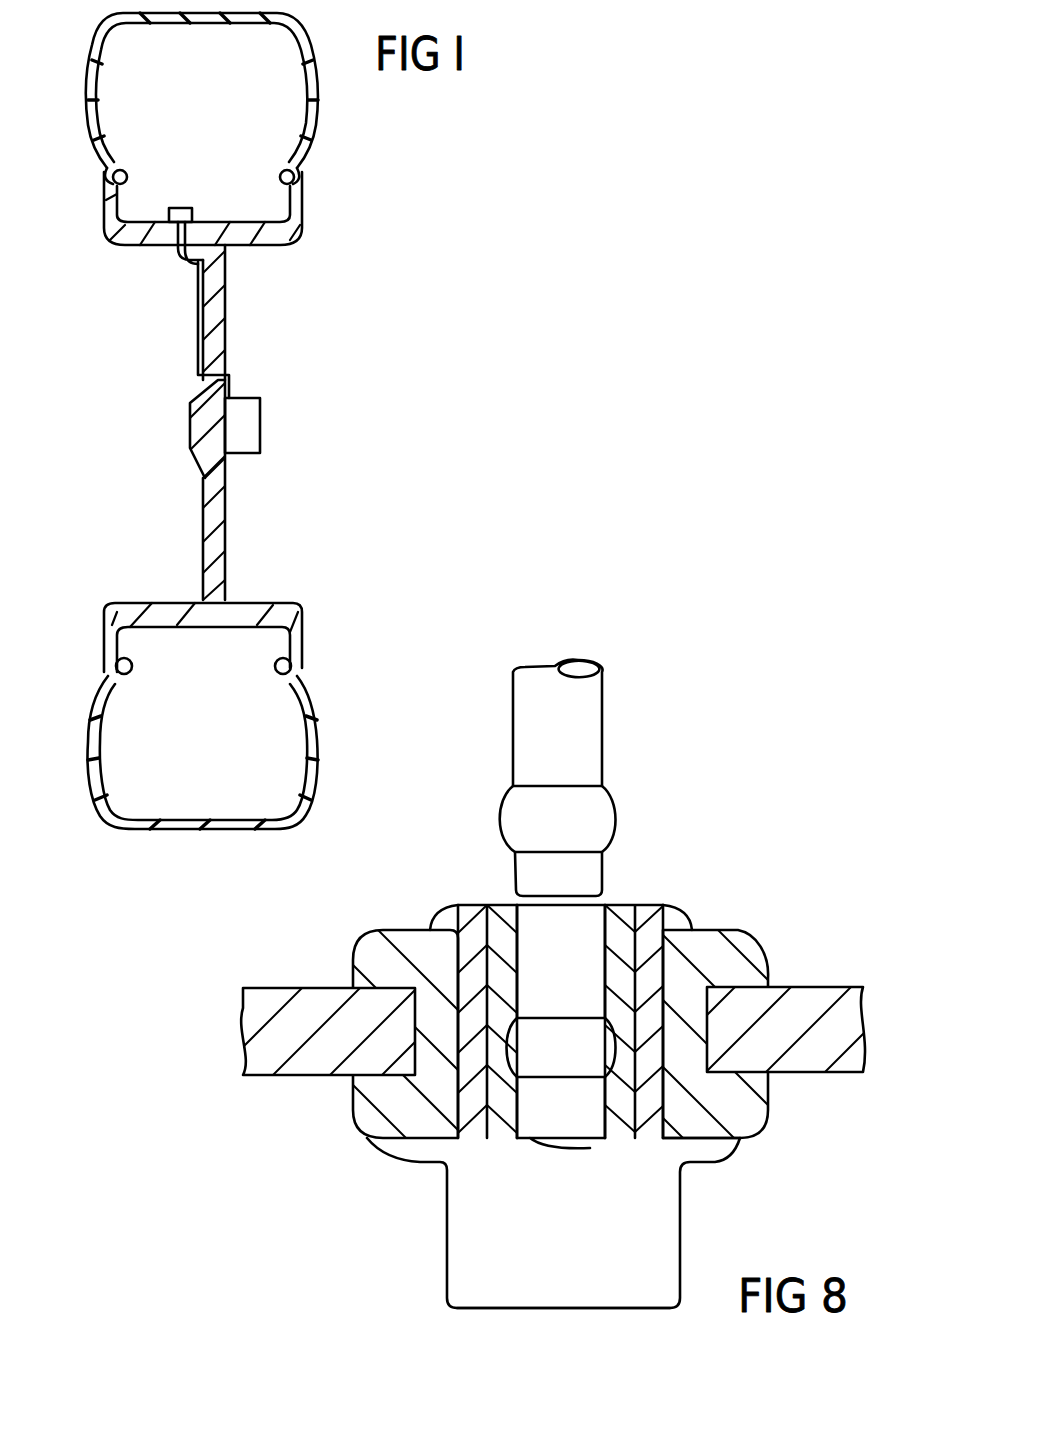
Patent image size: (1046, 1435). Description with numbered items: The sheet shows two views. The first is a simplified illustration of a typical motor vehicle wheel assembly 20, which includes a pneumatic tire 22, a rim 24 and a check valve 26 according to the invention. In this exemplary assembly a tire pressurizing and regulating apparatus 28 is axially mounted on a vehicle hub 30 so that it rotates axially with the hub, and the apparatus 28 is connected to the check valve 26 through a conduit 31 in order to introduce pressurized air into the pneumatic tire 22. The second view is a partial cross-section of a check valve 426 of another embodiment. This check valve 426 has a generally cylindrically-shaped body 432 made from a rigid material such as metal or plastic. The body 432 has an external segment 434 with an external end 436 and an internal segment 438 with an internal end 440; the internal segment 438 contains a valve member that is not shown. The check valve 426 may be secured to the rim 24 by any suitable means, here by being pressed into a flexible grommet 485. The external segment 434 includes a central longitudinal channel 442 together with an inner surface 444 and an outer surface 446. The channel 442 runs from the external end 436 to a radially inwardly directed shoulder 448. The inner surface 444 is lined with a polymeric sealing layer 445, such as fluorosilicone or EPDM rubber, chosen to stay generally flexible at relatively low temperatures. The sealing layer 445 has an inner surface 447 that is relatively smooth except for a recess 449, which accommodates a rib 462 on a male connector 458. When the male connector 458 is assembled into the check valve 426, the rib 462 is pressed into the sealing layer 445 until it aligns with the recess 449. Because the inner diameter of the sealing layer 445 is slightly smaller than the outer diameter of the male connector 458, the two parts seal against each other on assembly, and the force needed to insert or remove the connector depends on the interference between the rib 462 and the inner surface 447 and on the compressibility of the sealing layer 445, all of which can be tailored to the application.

In FIG. 1, the wheel assembly 20 is at (66, 164).
In FIG. 1, the pneumatic tire 22 is at (318, 100).
In FIG. 1, the rim 24 is at (217, 328).
In FIG. 1, the check valve 26 is at (190, 202).
In FIG. 1, the tire pressurizing and regulating apparatus 28 is at (245, 418).
In FIG. 1, the vehicle hub 30 is at (207, 440).
In FIG. 1, the conduit 31 is at (198, 335).
In FIG. 8, the check valve 426 is at (756, 784).
In FIG. 8, the body 432 is at (696, 1188).
In FIG. 8, the external segment 434 is at (792, 907).
In FIG. 8, the external end 436 is at (662, 935).
In FIG. 8, the internal segment 438 is at (342, 1308).
In FIG. 8, the internal end 440 is at (465, 1310).
In FIG. 8, the central longitudinal channel 442 is at (545, 953).
In FIG. 8, the inner surface 444 is at (623, 930).
In FIG. 8, the sealing layer 445 is at (613, 943).
In FIG. 8, the outer surface 446 is at (688, 925).
In FIG. 8, the inner surface 447 is at (520, 945).
In FIG. 8, the shoulder 448 is at (500, 1130).
In FIG. 8, the recess 449 is at (500, 1135).
In FIG. 8, the male connector 458 is at (606, 722).
In FIG. 8, the rib 462 is at (508, 805).
In FIG. 8, the flexible grommet 485 is at (765, 1133).